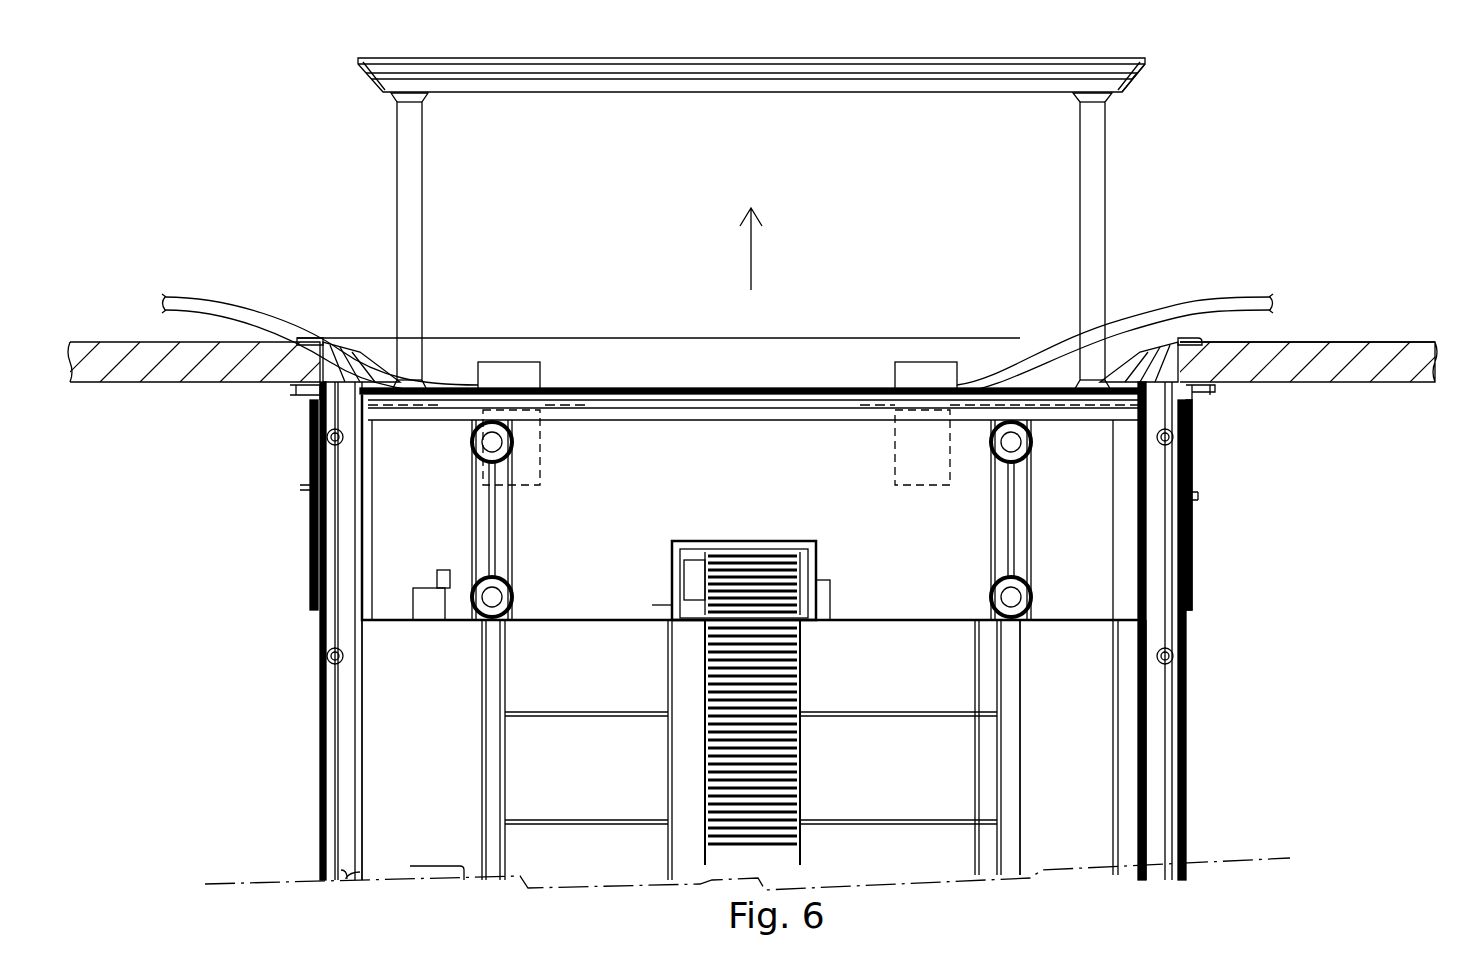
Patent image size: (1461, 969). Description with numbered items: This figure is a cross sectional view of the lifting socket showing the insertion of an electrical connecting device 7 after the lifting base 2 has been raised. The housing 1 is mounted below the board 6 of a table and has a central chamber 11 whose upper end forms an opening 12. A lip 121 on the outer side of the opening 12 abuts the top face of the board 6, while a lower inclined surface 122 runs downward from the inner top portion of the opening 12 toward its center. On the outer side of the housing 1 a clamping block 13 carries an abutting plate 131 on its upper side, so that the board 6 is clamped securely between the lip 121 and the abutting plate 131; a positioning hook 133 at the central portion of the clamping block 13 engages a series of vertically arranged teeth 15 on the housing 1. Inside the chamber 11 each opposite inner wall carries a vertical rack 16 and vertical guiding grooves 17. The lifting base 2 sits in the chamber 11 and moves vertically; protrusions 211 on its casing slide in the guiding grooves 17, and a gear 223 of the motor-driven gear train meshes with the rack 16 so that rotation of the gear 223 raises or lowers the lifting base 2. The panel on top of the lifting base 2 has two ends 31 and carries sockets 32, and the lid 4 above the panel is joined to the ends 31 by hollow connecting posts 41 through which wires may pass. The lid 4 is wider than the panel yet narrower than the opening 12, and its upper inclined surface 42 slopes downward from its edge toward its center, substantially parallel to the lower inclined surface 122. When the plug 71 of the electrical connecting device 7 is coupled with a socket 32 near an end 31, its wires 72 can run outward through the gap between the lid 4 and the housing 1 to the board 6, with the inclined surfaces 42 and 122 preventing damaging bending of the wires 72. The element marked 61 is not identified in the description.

The housing 1 is at (1198, 712).
The chamber 11 is at (1120, 677).
The opening 12 is at (1113, 362).
The lip 121 is at (1190, 336).
The lower inclined surface 122 is at (1160, 357).
The clamping block 13 is at (1200, 547).
The abutting plate 131 is at (1205, 392).
The positioning hook 133 is at (1198, 500).
The teeth 15 is at (1193, 487).
The rack 16 is at (805, 768).
The guiding grooves 17 is at (1013, 730).
The lifting base 2 is at (1147, 570).
The protrusions 211 is at (1013, 600).
The gear 223 is at (752, 617).
The ends 31 is at (445, 405).
The sockets 32 is at (545, 405).
The lid 4 is at (1147, 62).
The connecting posts 41 is at (412, 225).
The upper inclined surface 42 is at (1128, 88).
The board 6 is at (1360, 358).
The slab top surface 61 is at (1268, 345).
The electrical connecting device 7 is at (720, 290).
The plug 71 is at (513, 370).
The wires 72 is at (200, 297).